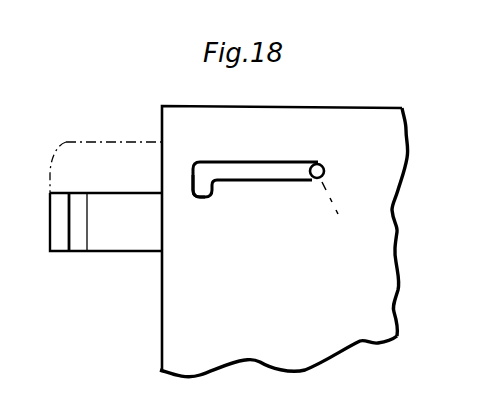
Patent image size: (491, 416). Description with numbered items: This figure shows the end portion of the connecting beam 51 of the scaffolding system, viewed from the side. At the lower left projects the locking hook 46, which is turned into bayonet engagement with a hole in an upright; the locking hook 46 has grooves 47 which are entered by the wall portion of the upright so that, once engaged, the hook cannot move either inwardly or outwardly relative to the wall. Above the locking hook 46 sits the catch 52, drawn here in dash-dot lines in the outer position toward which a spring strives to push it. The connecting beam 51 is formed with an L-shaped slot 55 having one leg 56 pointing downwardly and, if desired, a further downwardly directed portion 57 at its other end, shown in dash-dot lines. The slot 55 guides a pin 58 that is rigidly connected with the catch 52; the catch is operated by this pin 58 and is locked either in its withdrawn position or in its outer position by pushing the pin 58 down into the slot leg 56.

The locking hook 46 is at (133, 232).
The groove 47 is at (80, 241).
The connecting beam 51 is at (196, 107).
The catch 52 is at (92, 165).
The L-shaped slot 55 is at (263, 170).
The leg of slot 56 is at (205, 197).
The downwardly directed portion 57 is at (318, 188).
The pin 58 is at (318, 163).